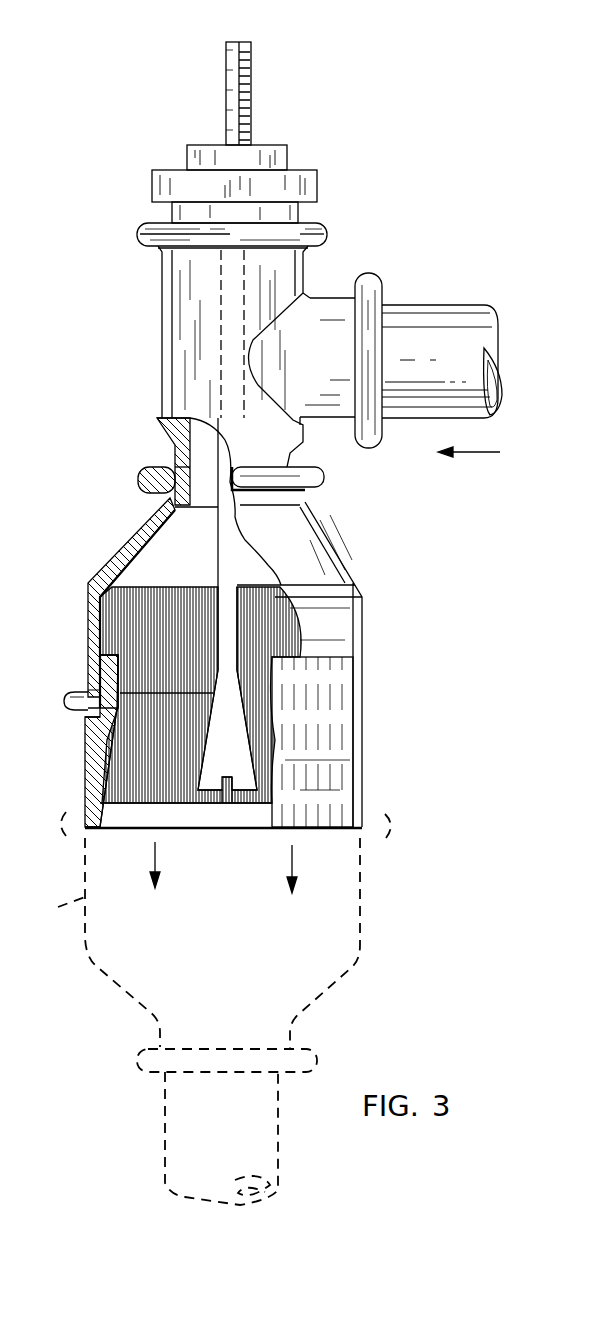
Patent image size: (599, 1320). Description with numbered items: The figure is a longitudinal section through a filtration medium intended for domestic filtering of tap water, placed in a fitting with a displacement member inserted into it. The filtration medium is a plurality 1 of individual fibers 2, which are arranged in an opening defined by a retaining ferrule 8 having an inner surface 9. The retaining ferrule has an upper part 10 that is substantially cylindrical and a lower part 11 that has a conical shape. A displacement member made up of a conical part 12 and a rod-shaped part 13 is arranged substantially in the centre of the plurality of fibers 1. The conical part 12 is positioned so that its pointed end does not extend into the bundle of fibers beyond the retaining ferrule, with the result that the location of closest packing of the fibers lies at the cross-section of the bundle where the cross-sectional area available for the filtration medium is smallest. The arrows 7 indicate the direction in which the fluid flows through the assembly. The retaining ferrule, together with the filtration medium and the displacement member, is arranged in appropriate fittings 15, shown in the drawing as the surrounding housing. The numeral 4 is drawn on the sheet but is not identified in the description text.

The plurality of individual fibers 1 is at (100, 583).
The individual fibers 2 is at (143, 640).
The sealing lip 4 is at (93, 690).
The arrows 7 is at (490, 452).
The retaining ferrule 8 is at (100, 733).
The inner surface 9 is at (66, 698).
The upper part 10 is at (96, 658).
The lower part 11 is at (98, 760).
The conical part 12 is at (220, 757).
The rod-shaped part 13 is at (225, 578).
The fittings 15 is at (132, 543).